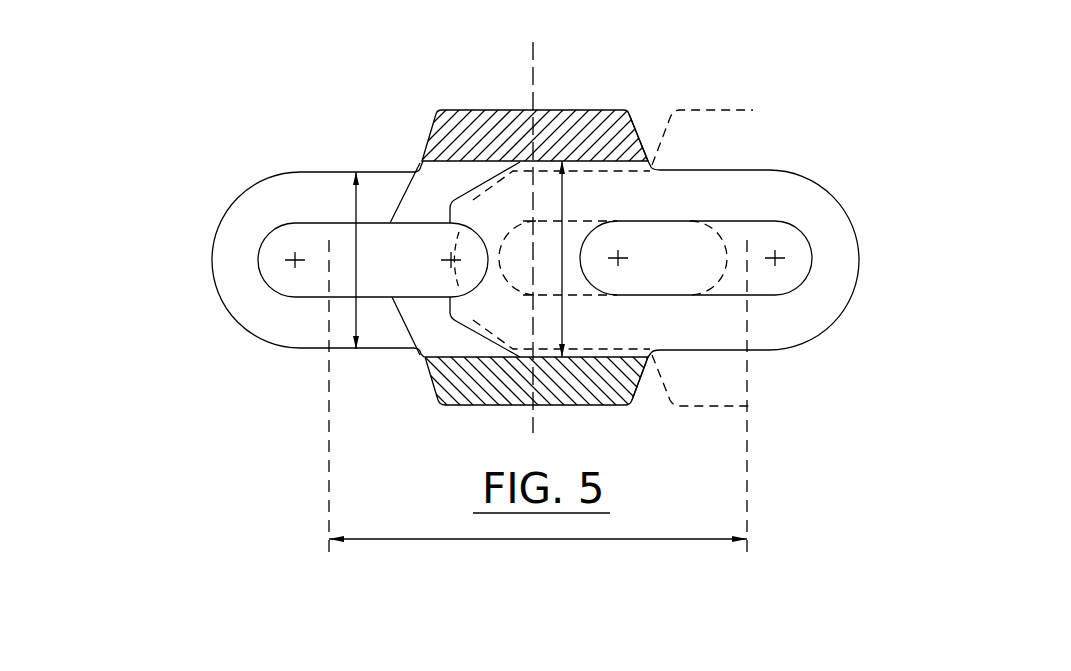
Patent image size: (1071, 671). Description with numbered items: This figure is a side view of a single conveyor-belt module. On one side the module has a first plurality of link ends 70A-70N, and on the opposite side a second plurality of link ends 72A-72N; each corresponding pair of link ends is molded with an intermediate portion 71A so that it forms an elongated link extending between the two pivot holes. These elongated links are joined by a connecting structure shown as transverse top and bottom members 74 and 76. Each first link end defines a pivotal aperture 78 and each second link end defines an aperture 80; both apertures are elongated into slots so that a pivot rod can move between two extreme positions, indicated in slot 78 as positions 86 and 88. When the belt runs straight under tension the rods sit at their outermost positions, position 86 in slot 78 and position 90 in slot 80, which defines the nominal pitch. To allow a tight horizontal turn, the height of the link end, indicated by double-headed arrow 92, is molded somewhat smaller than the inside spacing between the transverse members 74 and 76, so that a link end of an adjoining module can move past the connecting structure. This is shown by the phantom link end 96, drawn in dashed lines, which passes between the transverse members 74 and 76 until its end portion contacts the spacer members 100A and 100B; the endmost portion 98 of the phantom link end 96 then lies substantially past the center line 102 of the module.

The first plurality of link ends 70A-70N is at (237, 270).
The second plurality of link ends 72A-72N is at (835, 247).
The transverse bottom member 74 is at (625, 395).
The transverse top member 76 is at (625, 132).
The pivotal aperture 78 is at (340, 274).
The aperture 80 is at (733, 280).
The outermost pivot rod position 86 is at (295, 258).
The inner pivot rod position 88 is at (452, 248).
The outermost pivot rod position in slot 80 90 is at (563, 207).
The link end height 92 is at (357, 277).
The phantom link end 96 is at (642, 170).
The endmost portion of phantom link end 98 is at (420, 322).
The spacer member 100A is at (423, 192).
The spacer member 100B is at (420, 322).
The center line of the module 102 is at (533, 80).
The intermediate portion 71A is at (527, 540).